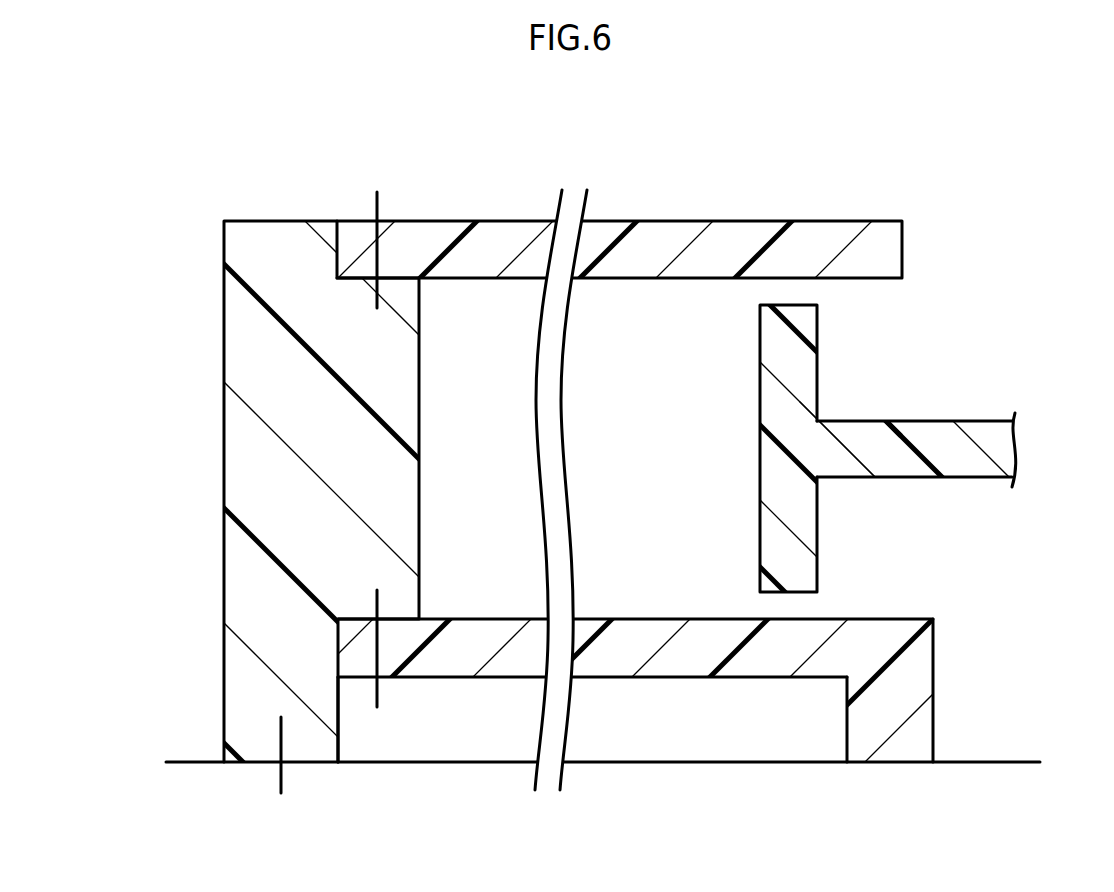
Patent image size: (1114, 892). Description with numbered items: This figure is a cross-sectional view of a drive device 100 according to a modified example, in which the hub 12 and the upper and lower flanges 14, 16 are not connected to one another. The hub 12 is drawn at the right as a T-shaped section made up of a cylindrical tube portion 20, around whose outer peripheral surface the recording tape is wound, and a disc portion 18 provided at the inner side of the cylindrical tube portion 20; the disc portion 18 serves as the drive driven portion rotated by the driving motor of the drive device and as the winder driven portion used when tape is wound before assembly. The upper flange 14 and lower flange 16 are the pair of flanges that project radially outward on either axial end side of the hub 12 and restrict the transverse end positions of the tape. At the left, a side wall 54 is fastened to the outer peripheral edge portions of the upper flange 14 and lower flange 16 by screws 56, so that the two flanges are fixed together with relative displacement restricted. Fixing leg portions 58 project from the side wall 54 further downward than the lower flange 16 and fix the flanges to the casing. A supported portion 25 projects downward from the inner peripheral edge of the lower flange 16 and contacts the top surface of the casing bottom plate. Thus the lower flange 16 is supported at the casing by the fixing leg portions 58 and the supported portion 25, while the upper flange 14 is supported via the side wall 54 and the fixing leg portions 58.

The drive device 100 is at (983, 152).
The hub 12 is at (904, 471).
The upper flange 14 is at (675, 212).
The lower flange 16 is at (657, 685).
The disc portion 18 is at (990, 430).
The cylindrical tube portion 20 is at (775, 485).
The supported portion 25 is at (917, 733).
The side wall 54 is at (247, 471).
The screws 56 is at (379, 200).
The fixing leg portions 58 is at (312, 742).